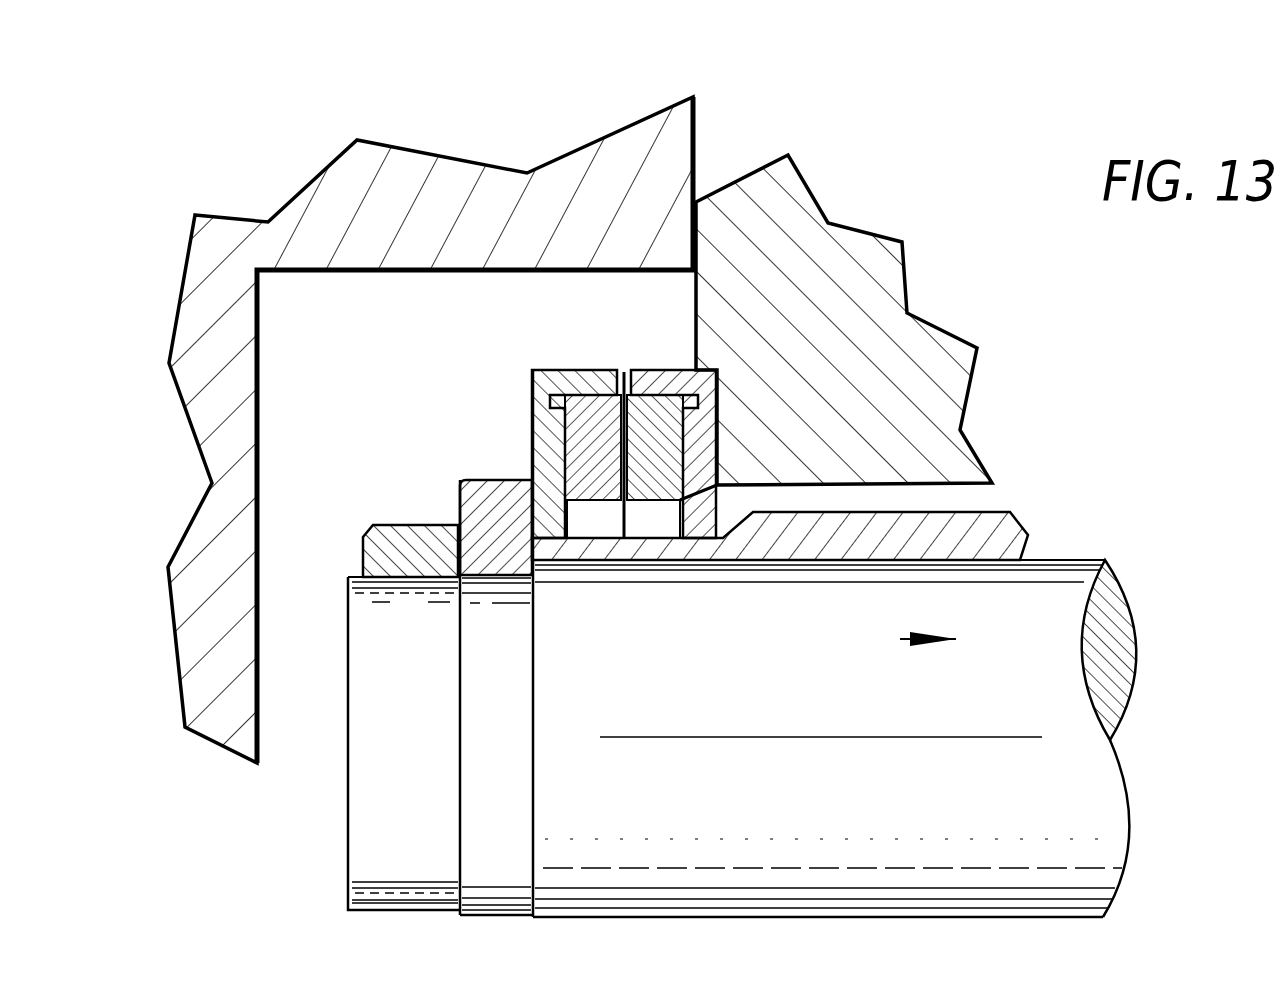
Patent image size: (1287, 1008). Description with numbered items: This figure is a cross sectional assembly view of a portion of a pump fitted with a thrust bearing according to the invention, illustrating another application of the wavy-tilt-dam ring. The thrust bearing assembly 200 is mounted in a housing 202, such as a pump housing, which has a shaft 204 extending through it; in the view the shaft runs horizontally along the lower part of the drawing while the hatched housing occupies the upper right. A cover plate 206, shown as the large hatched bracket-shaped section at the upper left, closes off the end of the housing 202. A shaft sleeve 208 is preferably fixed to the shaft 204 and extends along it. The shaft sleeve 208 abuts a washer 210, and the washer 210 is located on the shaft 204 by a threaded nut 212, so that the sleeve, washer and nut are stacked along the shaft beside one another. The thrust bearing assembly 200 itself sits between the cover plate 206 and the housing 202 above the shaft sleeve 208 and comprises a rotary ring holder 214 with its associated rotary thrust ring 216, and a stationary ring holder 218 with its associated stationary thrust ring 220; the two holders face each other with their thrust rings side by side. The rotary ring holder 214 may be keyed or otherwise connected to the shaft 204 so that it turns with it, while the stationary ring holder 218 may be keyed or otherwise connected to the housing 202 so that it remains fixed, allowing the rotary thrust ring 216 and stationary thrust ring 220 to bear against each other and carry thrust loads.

The thrust bearing assembly 200 is at (1072, 303).
The housing 202 is at (858, 227).
The shaft 204 is at (1073, 558).
The cover plate 206 is at (558, 156).
The shaft sleeve 208 is at (1017, 520).
The washer 210 is at (471, 479).
The threaded nut 212 is at (402, 523).
The rotary ring holder 214 is at (566, 369).
The rotary thrust ring 216 is at (580, 427).
The stationary ring holder 218 is at (657, 369).
The stationary thrust ring 220 is at (652, 445).